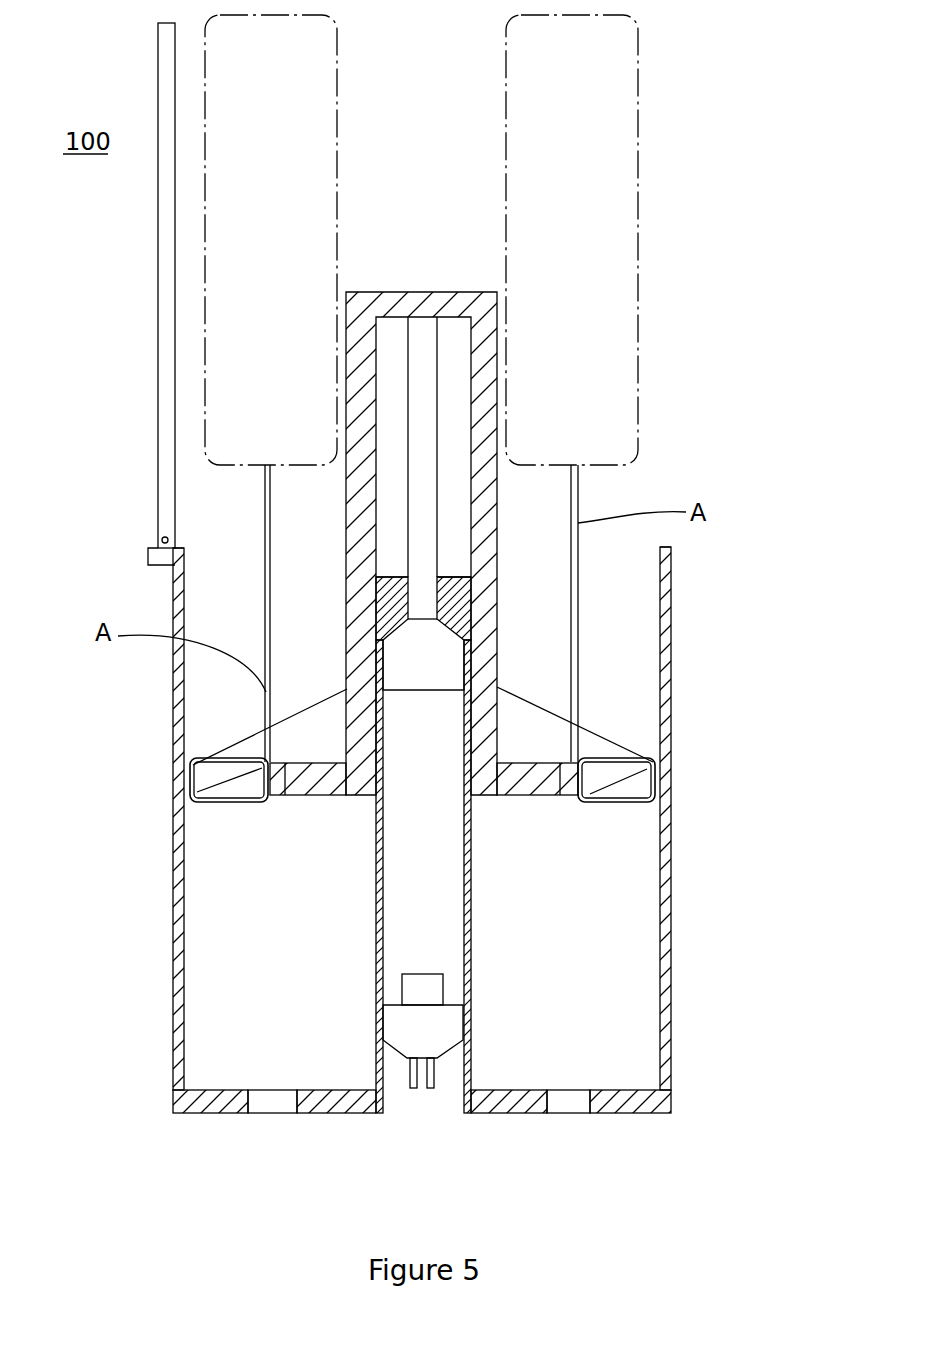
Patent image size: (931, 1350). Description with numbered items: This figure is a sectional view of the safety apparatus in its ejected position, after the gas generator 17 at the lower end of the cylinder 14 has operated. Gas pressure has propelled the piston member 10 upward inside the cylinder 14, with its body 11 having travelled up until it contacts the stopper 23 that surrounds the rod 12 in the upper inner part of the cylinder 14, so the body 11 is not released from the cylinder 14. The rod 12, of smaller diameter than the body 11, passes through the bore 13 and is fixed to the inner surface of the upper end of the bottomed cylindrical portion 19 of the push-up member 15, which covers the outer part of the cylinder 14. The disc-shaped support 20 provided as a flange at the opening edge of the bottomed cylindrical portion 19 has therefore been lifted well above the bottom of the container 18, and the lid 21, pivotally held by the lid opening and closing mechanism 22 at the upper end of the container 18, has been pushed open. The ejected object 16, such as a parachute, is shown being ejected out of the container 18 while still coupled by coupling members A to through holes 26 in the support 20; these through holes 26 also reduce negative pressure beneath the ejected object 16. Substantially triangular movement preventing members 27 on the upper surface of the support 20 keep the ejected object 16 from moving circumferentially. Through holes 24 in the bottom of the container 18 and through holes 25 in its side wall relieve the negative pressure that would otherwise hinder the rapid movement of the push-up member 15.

The piston member 10 is at (594, 621).
The body 11 is at (433, 657).
The rod 12 is at (430, 603).
The bore 13 is at (408, 577).
The cylinder 14 is at (471, 643).
The push-up member 15 is at (398, 291).
The ejected object 16 is at (620, 355).
The gas generator 17 is at (418, 1092).
The container 18 is at (668, 806).
The bottomed cylindrical portion 19 is at (450, 297).
The support 20 is at (322, 787).
The lid 21 is at (163, 452).
The lid opening and closing mechanism 22 is at (156, 538).
The stopper 23 is at (460, 575).
The through holes 24 is at (268, 1110).
The through holes 25 is at (178, 1057).
The through hole 26 is at (273, 792).
The movement preventing member 27 is at (313, 722).